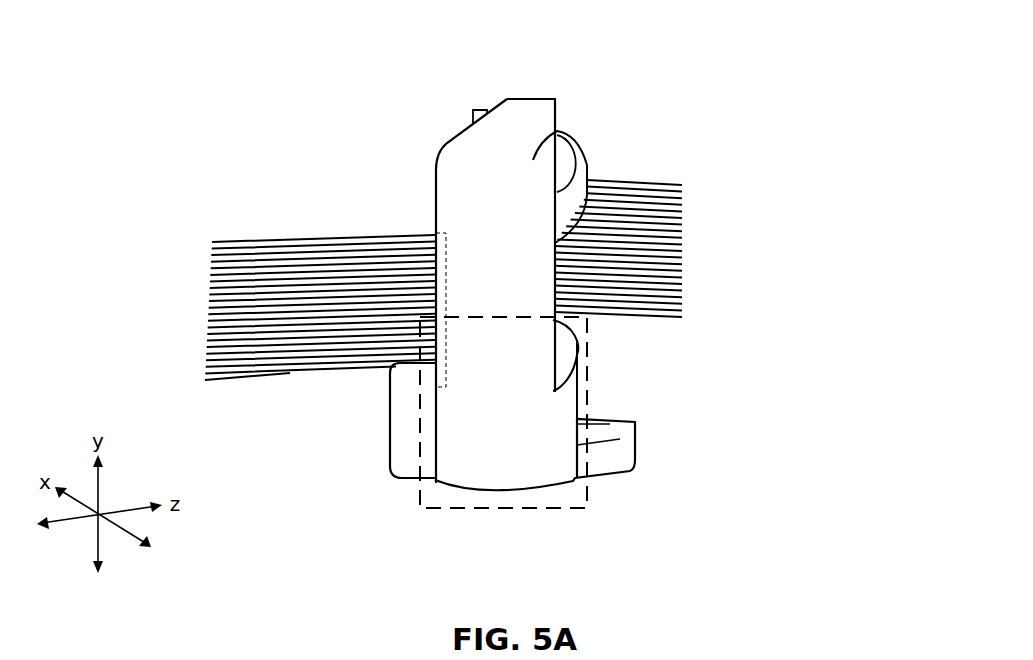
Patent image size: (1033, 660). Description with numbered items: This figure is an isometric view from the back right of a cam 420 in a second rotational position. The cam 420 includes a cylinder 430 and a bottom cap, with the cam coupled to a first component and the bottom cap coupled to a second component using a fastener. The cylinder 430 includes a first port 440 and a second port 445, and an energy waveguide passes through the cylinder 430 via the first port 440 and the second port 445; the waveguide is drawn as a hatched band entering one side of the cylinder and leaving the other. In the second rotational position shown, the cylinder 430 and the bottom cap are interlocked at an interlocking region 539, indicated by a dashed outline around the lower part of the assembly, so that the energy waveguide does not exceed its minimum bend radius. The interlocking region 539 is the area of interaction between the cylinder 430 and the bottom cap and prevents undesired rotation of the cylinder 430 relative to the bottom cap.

The cam 420 is at (463, 162).
The cylinder 430 is at (557, 132).
The first port 440 is at (443, 254).
The second port 445 is at (568, 282).
The interlocking region 539 is at (433, 503).